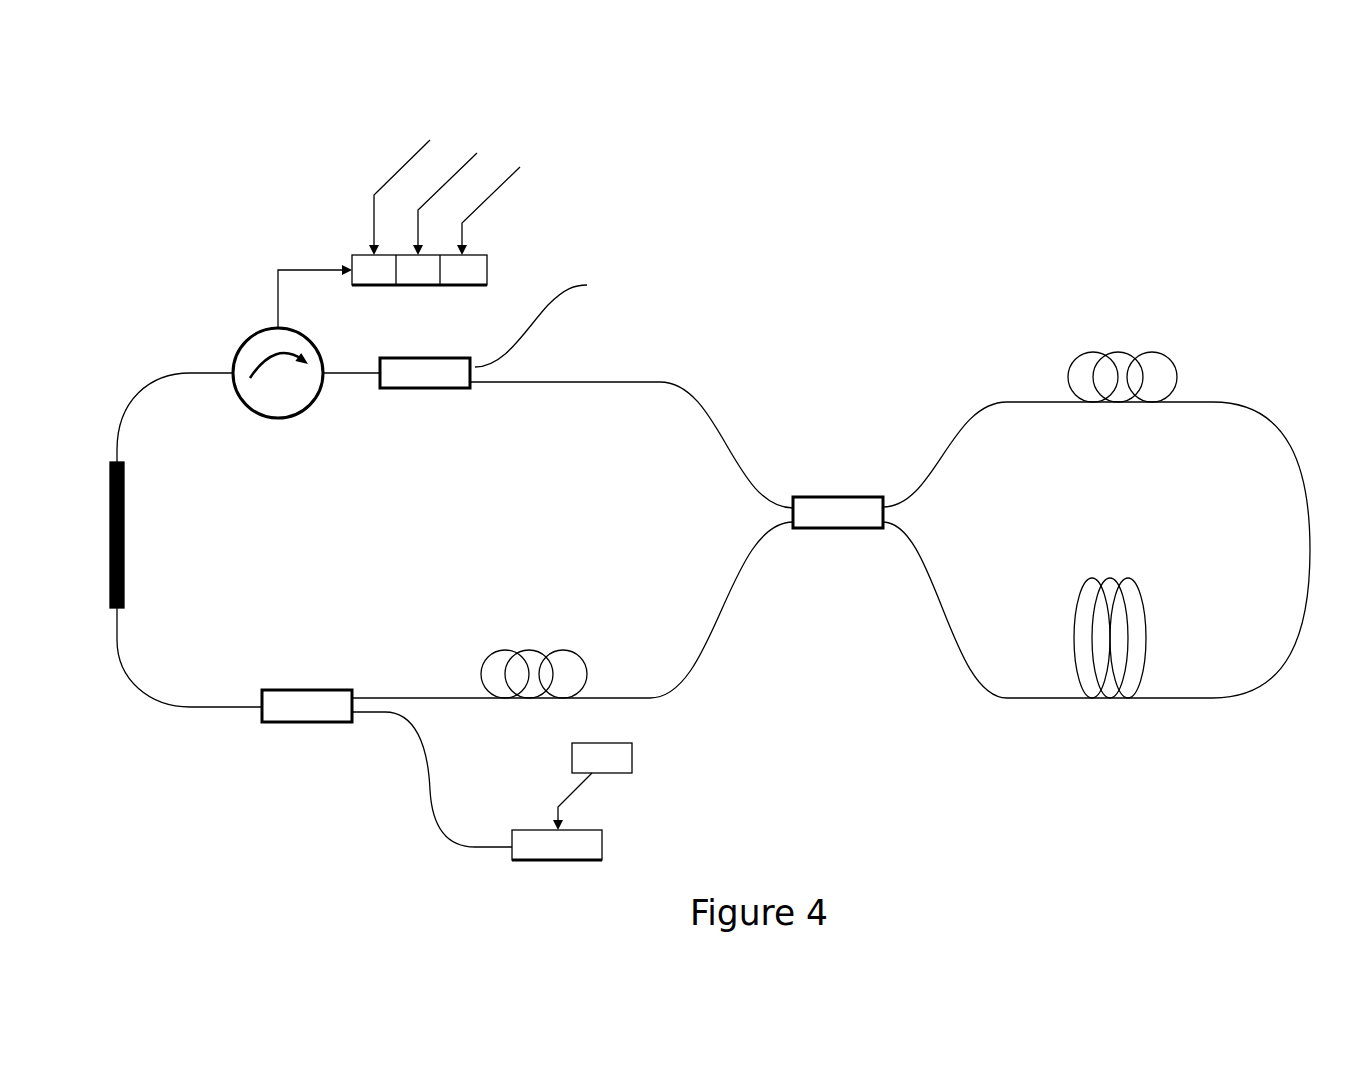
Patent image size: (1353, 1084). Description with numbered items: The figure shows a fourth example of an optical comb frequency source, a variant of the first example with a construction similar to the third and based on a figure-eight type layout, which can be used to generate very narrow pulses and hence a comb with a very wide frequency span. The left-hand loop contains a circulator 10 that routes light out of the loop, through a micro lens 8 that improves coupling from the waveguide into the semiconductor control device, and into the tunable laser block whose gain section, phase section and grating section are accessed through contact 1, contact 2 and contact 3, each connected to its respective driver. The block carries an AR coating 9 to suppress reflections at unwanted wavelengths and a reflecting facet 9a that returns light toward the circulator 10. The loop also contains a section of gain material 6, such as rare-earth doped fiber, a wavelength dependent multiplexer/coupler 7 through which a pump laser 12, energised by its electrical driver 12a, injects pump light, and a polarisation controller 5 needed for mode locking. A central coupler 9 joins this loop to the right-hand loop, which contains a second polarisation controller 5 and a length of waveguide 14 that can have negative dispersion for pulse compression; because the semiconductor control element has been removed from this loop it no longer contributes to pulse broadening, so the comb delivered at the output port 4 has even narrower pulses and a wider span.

The contact 1 (gain section) 1 is at (496, 199).
The contact 2 (phase section) 2 is at (451, 192).
The contact 3 (grating section) 3 is at (408, 184).
The output port 4 is at (534, 311).
The polarisation controller 5 is at (832, 513).
The section of gain material 6 is at (131, 530).
The wavelength dependent multiplexer/coupler 7 is at (456, 750).
The micro lens 8 is at (315, 296).
The AR (anti reflection) coating 9 is at (665, 469).
The reflecting facet 9a is at (405, 259).
The circulator 10 is at (285, 365).
The pump laser 12 is at (557, 845).
The electrical driver for pump laser 12a is at (592, 786).
The waveguide 14 is at (1110, 618).